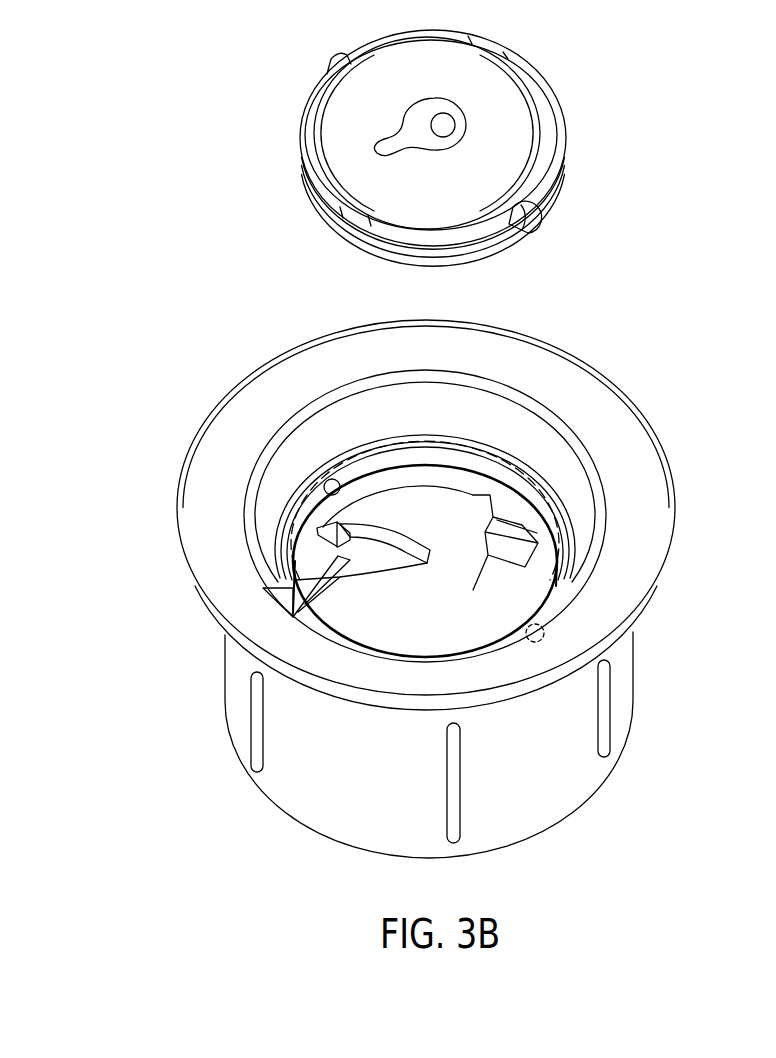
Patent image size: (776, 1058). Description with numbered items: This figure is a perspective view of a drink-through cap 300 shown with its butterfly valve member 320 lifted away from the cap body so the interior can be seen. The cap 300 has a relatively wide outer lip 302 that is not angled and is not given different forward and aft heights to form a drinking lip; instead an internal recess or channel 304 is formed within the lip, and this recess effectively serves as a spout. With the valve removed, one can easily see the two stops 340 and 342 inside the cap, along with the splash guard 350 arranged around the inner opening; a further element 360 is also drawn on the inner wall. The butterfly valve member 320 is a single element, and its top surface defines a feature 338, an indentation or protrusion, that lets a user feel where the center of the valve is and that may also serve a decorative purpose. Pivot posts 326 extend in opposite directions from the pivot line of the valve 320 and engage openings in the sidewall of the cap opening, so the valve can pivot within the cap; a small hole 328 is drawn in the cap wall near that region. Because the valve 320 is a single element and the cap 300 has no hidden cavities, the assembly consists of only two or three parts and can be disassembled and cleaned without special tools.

The cap 300 is at (406, 560).
The outer lip 302 is at (192, 523).
The internal recess or channel 304 is at (275, 580).
The butterfly valve member 320 is at (424, 148).
The pivot posts 326 is at (330, 63).
The pin hole 328 is at (315, 548).
The feature 338 is at (425, 128).
The stop 340 is at (307, 540).
The stop 342 is at (387, 543).
The splash guard 350 is at (447, 505).
The latch tab 360 is at (523, 537).